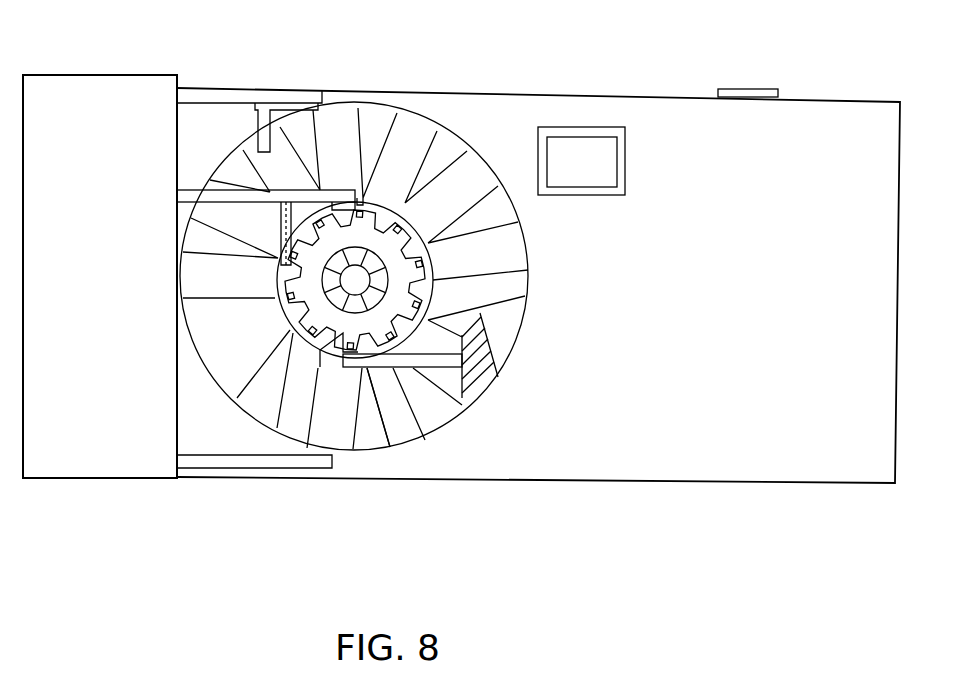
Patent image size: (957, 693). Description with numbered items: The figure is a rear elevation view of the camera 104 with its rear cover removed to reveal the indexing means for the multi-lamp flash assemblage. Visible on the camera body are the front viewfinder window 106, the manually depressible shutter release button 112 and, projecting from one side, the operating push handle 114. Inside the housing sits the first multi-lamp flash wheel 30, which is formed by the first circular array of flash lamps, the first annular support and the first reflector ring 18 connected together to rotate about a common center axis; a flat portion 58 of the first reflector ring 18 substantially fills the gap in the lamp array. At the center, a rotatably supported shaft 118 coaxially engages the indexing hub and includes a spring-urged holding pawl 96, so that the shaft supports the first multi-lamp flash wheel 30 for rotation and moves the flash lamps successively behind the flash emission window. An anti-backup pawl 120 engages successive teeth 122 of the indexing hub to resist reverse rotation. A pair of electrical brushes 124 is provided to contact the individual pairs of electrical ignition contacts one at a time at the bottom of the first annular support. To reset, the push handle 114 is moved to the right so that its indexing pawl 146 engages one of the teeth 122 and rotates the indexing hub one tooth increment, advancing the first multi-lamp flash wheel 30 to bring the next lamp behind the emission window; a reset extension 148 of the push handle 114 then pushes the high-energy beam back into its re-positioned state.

The operating push handle 114 is at (83, 92).
The camera 104 is at (456, 90).
The shutter release button 112 is at (758, 89).
The front viewfinder window 106 is at (580, 148).
The reset extension 148 is at (262, 120).
The first multi-lamp flash wheel 30 is at (423, 433).
The first reflector ring 18 is at (402, 440).
The flat portion 58 is at (222, 345).
The spring-urged holding pawl 96 is at (360, 245).
The rotatably supported shaft 118 is at (362, 280).
The electrical brushes 124 is at (281, 230).
The indexing pawl 146 is at (340, 196).
The anti-backup pawl 120 is at (332, 355).
The teeth 122 is at (365, 360).